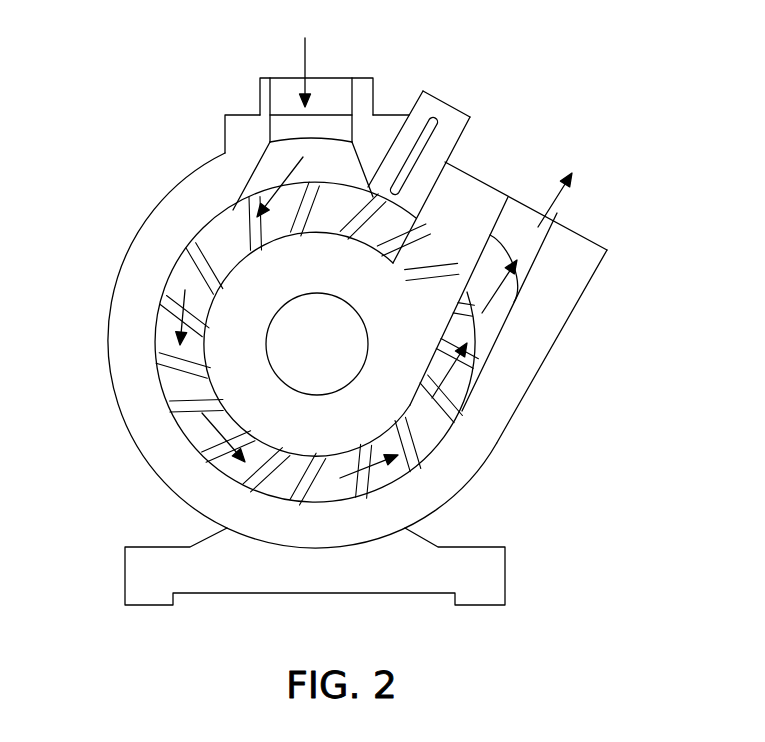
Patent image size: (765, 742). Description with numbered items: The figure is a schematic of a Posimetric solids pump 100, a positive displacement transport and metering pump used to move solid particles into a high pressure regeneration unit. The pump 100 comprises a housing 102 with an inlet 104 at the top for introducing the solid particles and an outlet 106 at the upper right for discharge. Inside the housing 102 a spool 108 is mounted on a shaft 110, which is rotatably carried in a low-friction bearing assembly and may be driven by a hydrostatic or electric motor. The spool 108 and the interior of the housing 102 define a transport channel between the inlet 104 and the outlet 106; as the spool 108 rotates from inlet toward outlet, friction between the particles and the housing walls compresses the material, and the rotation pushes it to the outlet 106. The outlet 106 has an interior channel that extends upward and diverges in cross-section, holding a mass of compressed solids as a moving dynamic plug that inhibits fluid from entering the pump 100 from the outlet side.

The solids pump 100 is at (588, 66).
The housing 102 is at (128, 401).
The inlet 104 is at (258, 86).
The outlet 106 is at (546, 224).
The spool 108 is at (186, 290).
The shaft 110 is at (356, 326).